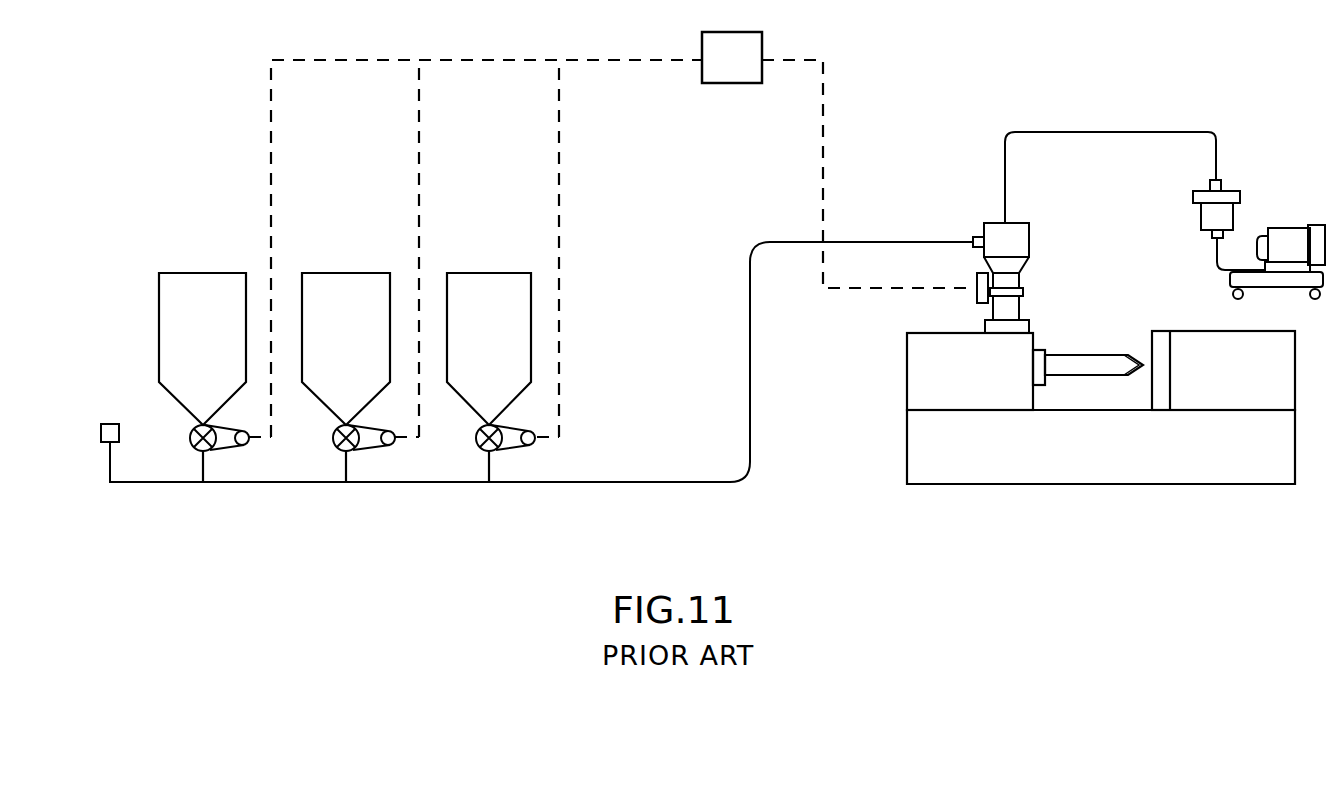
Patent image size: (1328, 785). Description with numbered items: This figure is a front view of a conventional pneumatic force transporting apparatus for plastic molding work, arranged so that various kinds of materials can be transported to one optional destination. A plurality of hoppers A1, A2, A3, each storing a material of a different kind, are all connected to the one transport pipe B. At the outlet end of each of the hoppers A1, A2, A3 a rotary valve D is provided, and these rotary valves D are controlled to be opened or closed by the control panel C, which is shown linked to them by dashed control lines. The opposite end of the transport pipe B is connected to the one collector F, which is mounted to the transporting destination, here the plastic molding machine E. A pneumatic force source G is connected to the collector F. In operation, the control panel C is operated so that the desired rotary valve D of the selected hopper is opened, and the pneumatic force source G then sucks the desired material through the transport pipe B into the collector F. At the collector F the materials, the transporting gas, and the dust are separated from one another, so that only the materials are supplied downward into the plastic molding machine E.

The hopper A1 is at (158, 300).
The hopper A2 is at (303, 285).
The hopper A3 is at (452, 273).
The transport pipe B is at (667, 480).
The control panel C is at (977, 293).
The rotary valve D is at (208, 450).
The plastic molding machine E is at (903, 379).
The collector F is at (982, 219).
The pneumatic force source G is at (1300, 228).